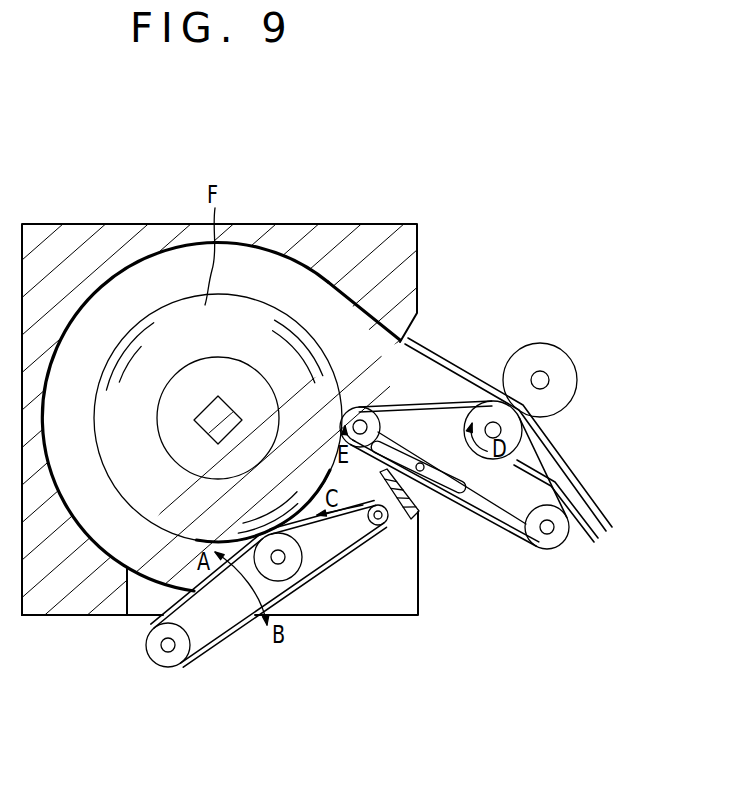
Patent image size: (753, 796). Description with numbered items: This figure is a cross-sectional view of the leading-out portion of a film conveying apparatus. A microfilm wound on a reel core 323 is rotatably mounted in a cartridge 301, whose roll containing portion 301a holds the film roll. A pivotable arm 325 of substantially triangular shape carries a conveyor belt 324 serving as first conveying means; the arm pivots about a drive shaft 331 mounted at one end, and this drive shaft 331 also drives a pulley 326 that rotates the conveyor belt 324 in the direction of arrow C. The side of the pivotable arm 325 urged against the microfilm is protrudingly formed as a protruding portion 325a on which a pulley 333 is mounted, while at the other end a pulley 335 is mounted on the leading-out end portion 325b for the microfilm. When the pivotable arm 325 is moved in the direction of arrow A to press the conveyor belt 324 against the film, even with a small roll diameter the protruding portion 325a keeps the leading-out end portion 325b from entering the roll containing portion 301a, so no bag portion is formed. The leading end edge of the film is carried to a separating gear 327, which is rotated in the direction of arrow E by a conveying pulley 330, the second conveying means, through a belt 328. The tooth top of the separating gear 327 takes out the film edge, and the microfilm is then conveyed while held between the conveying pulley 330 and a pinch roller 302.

The cartridge 301 is at (137, 223).
The roll containing portion 301a is at (120, 552).
The pinch roller 302 is at (562, 360).
The reel core 323 is at (233, 367).
The conveyor belt 324 is at (342, 547).
The pivotable arm 325 is at (230, 617).
The protruding portion 325a is at (305, 540).
The leading-out end portion 325b is at (397, 505).
The pulley 326 is at (177, 664).
The separating gear 327 is at (368, 417).
The belt 328 is at (452, 400).
The conveying pulley 330 is at (508, 430).
The drive shaft 331 is at (167, 653).
The pulley 333 is at (388, 527).
The pulley 335 is at (383, 523).